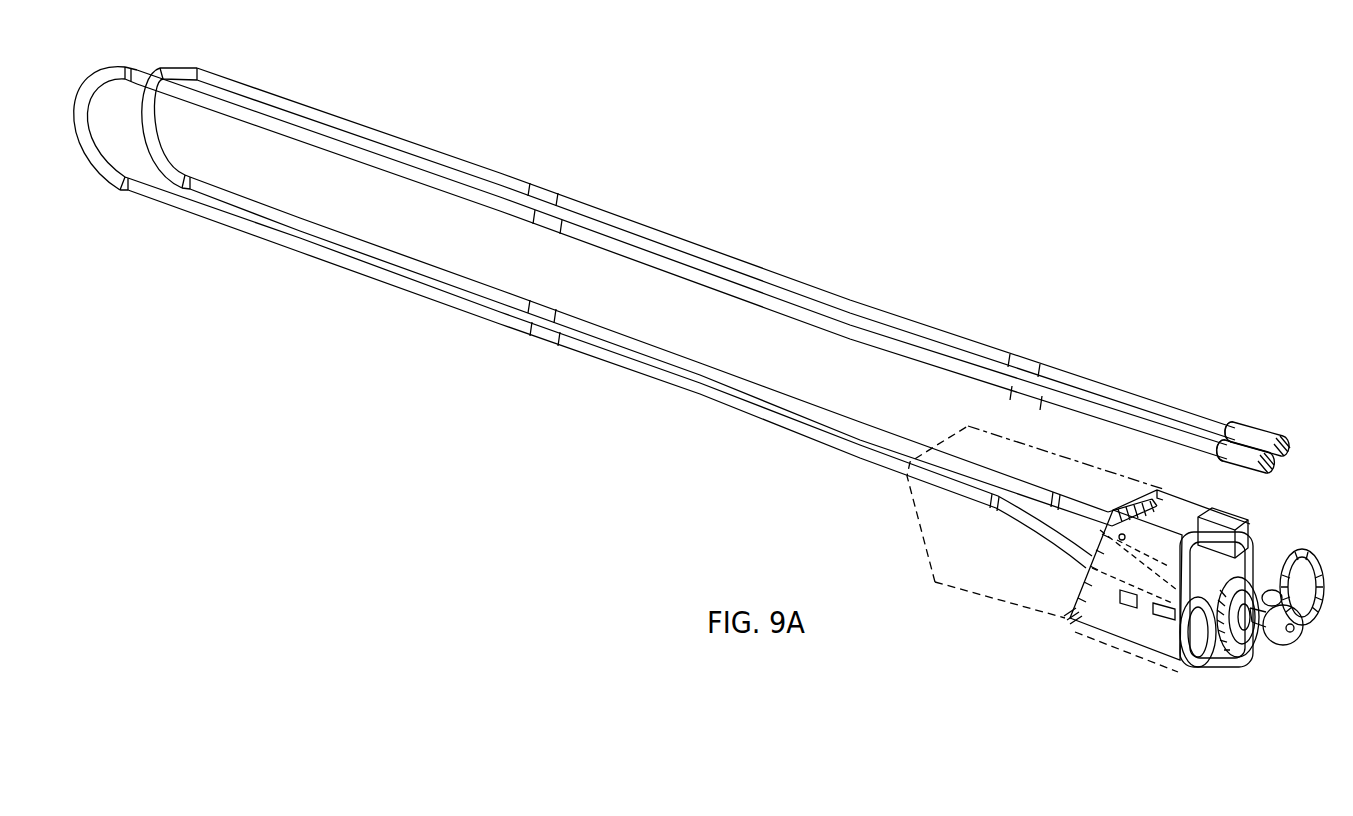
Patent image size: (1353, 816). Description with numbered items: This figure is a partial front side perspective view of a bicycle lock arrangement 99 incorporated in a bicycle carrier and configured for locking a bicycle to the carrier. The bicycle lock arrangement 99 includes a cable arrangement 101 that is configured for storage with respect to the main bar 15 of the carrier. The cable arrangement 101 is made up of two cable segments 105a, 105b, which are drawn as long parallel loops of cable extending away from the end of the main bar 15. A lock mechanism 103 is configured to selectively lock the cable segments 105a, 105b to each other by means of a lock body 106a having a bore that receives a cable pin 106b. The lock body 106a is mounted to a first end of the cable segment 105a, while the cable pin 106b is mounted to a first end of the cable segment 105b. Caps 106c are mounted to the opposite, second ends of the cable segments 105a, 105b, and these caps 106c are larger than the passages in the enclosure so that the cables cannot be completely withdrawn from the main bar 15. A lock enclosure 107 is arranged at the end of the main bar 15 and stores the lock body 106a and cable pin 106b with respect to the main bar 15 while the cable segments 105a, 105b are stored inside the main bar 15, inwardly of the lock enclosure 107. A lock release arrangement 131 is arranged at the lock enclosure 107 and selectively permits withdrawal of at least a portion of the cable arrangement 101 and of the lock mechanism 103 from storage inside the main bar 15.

The bicycle lock arrangement 99 is at (902, 226).
The cable arrangement 101 is at (766, 424).
The cable segment 105a is at (830, 416).
The cable segment 105b is at (873, 457).
The caps 106c is at (1250, 453).
The main bar 15 is at (970, 573).
The lock enclosure 107 is at (1070, 618).
The cable pin 106b is at (1135, 612).
The lock body 106a is at (1181, 660).
The lock release arrangement 131 is at (1250, 522).
The lock mechanism 103 is at (1263, 658).